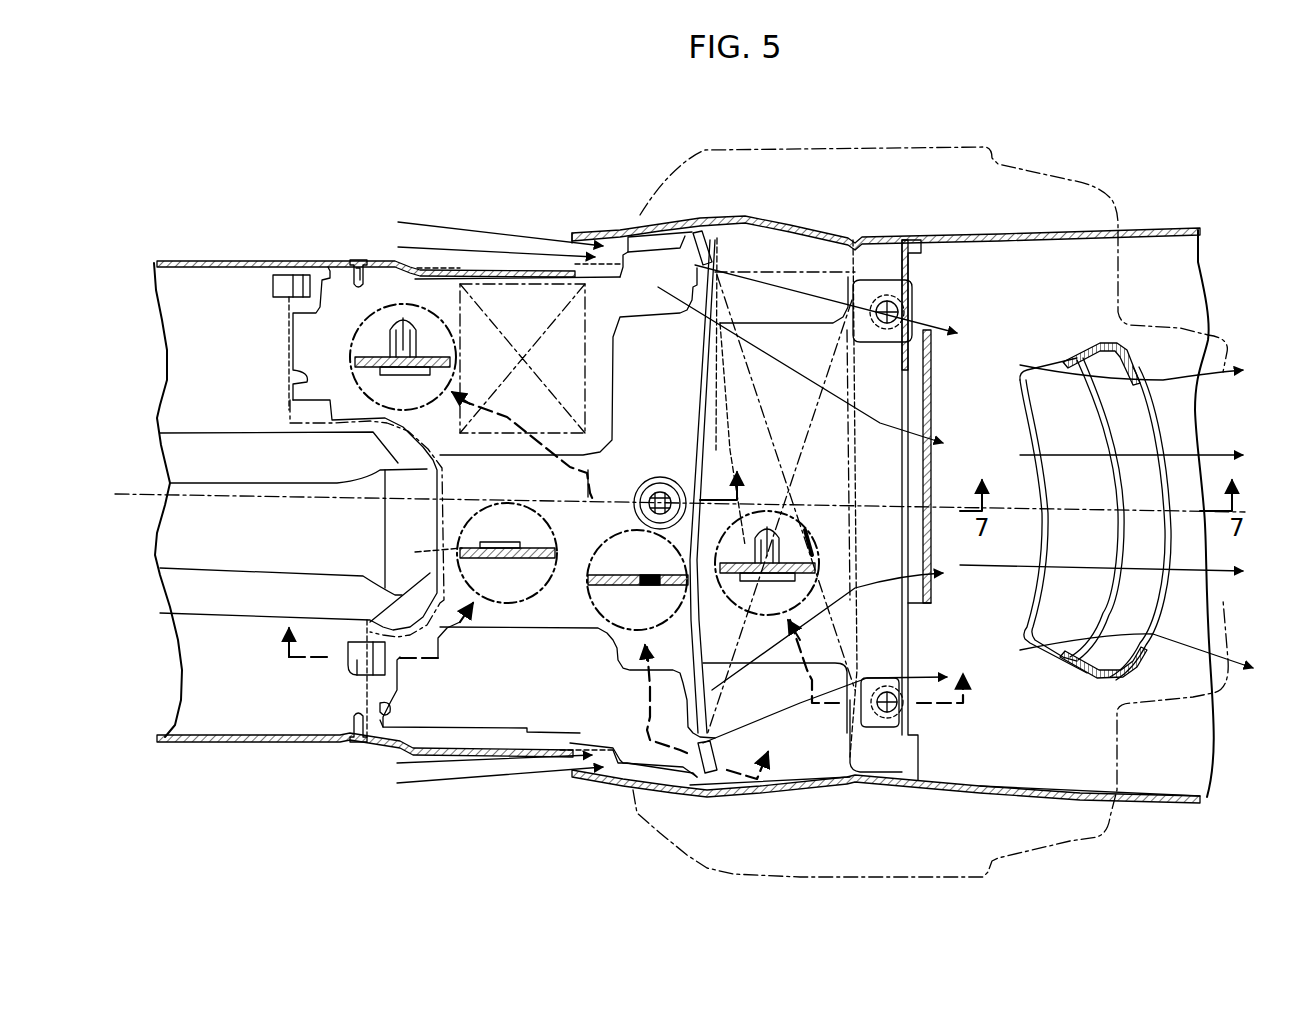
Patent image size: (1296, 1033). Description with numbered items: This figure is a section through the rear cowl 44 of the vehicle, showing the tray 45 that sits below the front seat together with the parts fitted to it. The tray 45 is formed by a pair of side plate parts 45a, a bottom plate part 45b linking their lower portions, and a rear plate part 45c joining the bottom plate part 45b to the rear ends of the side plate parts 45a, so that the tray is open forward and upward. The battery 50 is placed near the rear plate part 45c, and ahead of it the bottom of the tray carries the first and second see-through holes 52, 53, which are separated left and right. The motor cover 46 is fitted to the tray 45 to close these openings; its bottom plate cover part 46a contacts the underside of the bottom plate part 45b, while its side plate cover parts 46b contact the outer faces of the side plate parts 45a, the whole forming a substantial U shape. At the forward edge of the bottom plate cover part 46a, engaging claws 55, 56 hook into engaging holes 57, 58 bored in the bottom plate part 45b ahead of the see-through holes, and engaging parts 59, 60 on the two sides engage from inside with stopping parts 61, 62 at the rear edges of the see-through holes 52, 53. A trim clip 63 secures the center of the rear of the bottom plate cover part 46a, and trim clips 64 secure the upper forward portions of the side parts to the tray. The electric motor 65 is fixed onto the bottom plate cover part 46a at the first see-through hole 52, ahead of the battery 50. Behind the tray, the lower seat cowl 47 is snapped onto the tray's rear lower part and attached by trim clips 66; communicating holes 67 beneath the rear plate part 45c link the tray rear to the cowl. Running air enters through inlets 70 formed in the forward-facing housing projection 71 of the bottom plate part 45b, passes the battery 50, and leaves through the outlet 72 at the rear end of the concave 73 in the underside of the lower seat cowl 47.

The rear cowl 44 is at (1055, 230).
The tray 45 is at (274, 258).
The side plate part 45a is at (192, 272).
The bottom plate part 45b is at (232, 260).
The rear plate part 45c is at (933, 428).
The motor cover 46 is at (385, 258).
The bottom plate cover part 46a is at (386, 557).
The side plate cover part 46b is at (444, 269).
The lower seat cowl 47 is at (977, 794).
The battery 50 is at (827, 273).
The first see-through hole 52 is at (300, 370).
The second see-through hole 53 is at (420, 271).
The engaging claw 55 is at (277, 285).
The engaging claw 56 is at (493, 548).
The engaging hole 57 is at (278, 298).
The engaging hole 58 is at (460, 545).
The engaging part 59 is at (708, 226).
The engaging part 60 is at (640, 575).
The stopping part 61 is at (714, 258).
The stopping part 62 is at (715, 752).
The trim clip 63 is at (395, 375).
The trim clip 64 is at (351, 260).
The electric motor 65 is at (617, 362).
The trim clip 66 is at (897, 303).
The communicating hole 67 is at (917, 360).
The inlet 70 is at (585, 228).
The housing projection 71 is at (572, 245).
The outlet 72 is at (1165, 548).
The concave 73 is at (1063, 533).